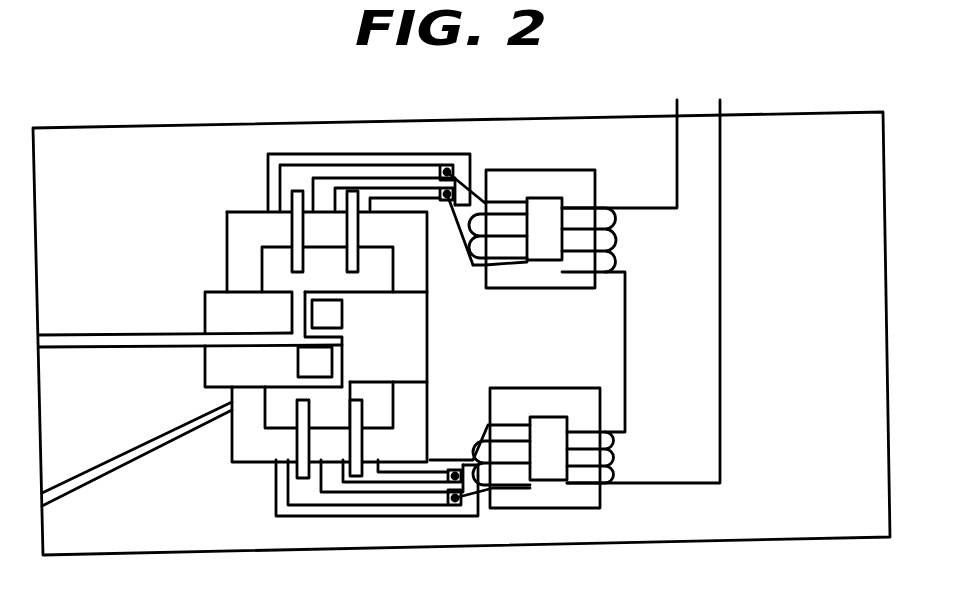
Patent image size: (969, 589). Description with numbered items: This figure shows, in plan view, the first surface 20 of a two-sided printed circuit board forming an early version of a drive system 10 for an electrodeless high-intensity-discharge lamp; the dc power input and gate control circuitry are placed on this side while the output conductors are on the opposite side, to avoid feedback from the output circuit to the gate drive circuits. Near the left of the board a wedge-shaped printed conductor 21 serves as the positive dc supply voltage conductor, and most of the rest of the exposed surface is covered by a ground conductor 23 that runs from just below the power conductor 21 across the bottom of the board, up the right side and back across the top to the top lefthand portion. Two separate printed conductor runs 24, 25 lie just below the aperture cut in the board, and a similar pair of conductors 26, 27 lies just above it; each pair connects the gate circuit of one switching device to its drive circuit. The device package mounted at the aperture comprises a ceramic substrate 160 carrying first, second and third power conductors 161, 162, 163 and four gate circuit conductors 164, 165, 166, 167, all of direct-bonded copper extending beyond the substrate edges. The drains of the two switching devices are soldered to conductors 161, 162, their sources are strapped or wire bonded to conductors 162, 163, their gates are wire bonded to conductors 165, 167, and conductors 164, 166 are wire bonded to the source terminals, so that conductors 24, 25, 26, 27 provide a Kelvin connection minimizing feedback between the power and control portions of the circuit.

The electrostatic actuator apparatus 10 is at (598, 106).
The first surface of the circuit board 20 is at (95, 127).
The wedge-shaped printed conductor 21 is at (90, 427).
The ground conductor 23 is at (185, 155).
The printed conductor run 24 is at (432, 495).
The printed conductor run 25 is at (412, 475).
The printed conductor 26 is at (397, 170).
The printed conductor 27 is at (422, 190).
The ceramic substrate 160 is at (385, 407).
The first power conductor 161 is at (222, 373).
The second power conductor 162 is at (406, 312).
The third power conductor 163 is at (215, 305).
The gate circuit conductor 164 is at (361, 441).
The gate circuit conductor 165 is at (299, 439).
The gate circuit conductor 166 is at (296, 224).
The gate circuit conductor 167 is at (359, 227).